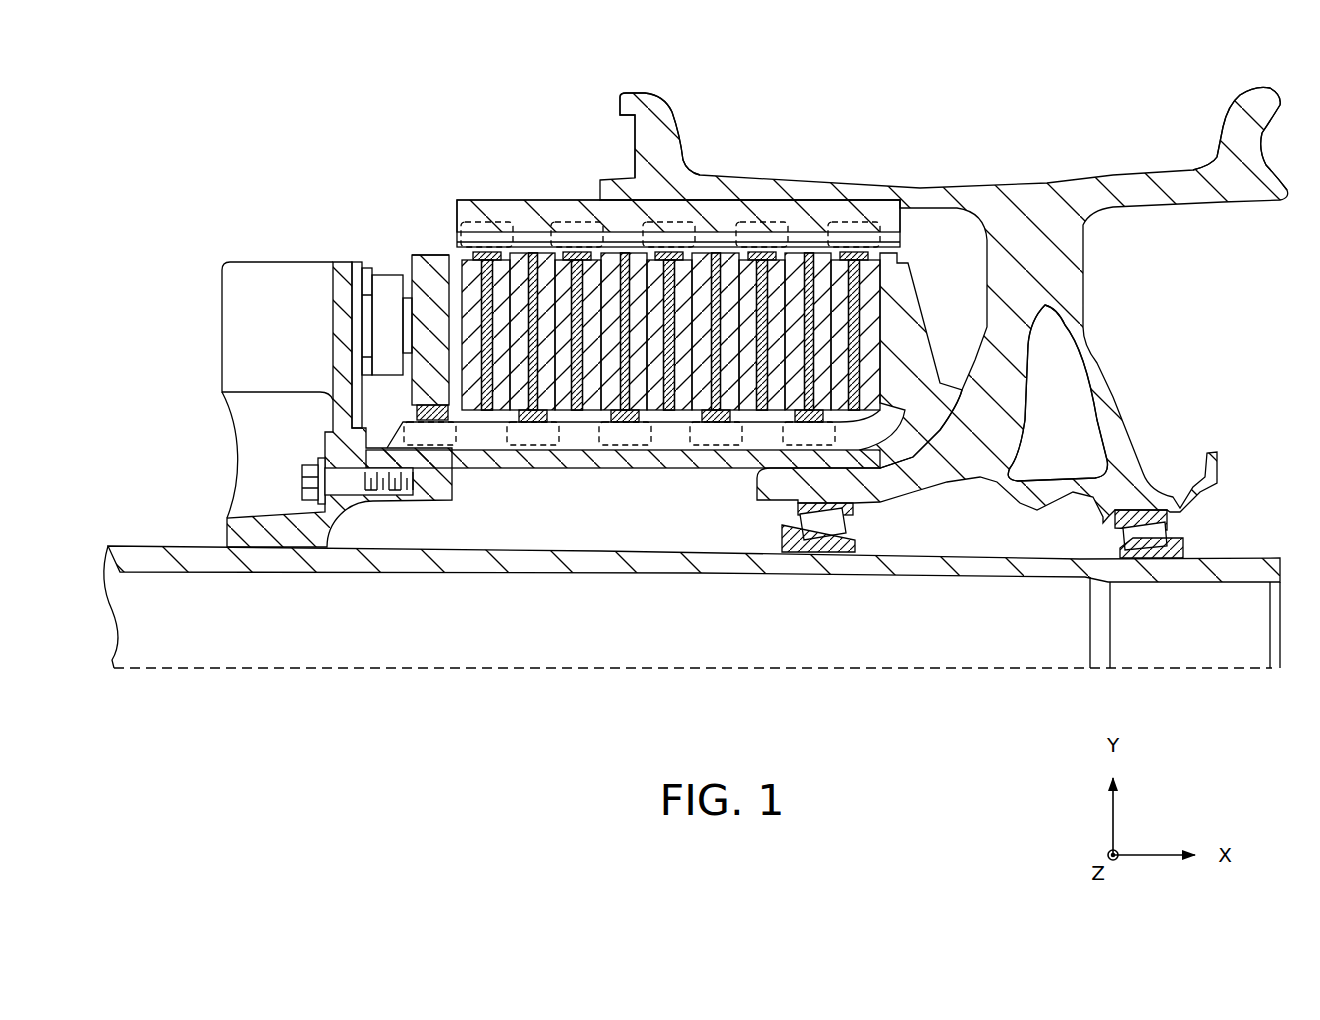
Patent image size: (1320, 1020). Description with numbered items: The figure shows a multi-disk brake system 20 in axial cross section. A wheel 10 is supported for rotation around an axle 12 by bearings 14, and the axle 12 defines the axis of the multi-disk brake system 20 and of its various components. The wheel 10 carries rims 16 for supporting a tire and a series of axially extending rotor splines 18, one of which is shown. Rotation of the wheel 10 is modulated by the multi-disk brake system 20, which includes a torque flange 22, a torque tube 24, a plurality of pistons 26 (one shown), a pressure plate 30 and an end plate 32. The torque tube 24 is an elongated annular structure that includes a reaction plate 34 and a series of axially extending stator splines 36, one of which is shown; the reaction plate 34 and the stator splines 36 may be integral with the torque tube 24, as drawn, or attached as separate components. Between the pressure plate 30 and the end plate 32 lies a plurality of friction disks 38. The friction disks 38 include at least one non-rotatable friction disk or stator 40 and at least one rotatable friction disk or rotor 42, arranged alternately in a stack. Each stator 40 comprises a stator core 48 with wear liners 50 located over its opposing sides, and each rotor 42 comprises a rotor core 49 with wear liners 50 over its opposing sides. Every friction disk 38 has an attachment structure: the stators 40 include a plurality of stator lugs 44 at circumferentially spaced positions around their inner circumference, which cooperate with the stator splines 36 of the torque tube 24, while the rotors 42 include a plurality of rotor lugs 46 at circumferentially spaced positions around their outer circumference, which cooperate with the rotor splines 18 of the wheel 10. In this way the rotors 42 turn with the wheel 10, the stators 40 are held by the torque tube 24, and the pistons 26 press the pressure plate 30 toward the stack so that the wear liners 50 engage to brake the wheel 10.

The wheel 10 is at (1090, 158).
The axle 12 is at (994, 567).
The bearings 14 is at (855, 512).
The rims 16 is at (652, 106).
The rotor splines 18 is at (620, 208).
The multi-disk brake system 20 is at (330, 150).
The torque flange 22 is at (333, 445).
The torque tube 24 is at (548, 462).
The pistons 26 is at (385, 280).
The pressure plate 30 is at (425, 255).
The end plate 32 is at (900, 240).
The reaction plate 34 is at (935, 380).
The stator splines 36 is at (598, 468).
The friction disks 38 is at (448, 250).
The non-rotatable friction disk (stator) 40 is at (541, 426).
The rotatable friction disk (rotor) 42 is at (487, 248).
The stator lugs 44 is at (782, 428).
The rotor lugs 46 is at (743, 220).
The stator core 48 is at (808, 300).
The rotor core 49 is at (857, 330).
The wear liners 50 is at (820, 250).